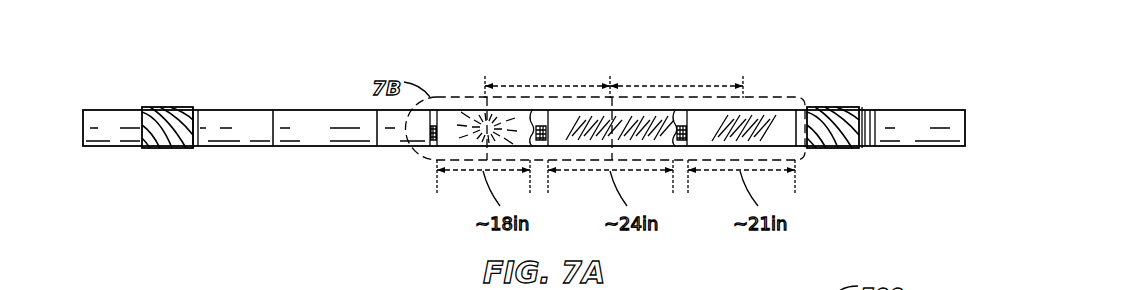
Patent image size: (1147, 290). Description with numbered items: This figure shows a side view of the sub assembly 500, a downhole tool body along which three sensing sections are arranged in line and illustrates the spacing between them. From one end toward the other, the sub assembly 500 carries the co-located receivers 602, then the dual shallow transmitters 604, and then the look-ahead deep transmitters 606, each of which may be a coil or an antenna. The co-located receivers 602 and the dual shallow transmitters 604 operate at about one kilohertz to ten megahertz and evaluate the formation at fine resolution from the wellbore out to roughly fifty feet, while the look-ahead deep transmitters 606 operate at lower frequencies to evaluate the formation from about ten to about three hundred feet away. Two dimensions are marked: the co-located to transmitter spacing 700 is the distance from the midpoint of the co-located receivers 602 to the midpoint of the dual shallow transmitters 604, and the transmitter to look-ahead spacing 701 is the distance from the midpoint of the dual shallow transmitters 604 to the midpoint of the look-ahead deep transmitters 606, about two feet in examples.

The sub assembly 500 is at (880, 52).
The co-located receivers 602 is at (465, 98).
The dual shallow transmitters 604 is at (575, 98).
The look-ahead deep transmitters 606 is at (775, 98).
The co-located to transmitter spacing 700 is at (523, 84).
The transmitter to look-ahead spacing 701 is at (680, 84).